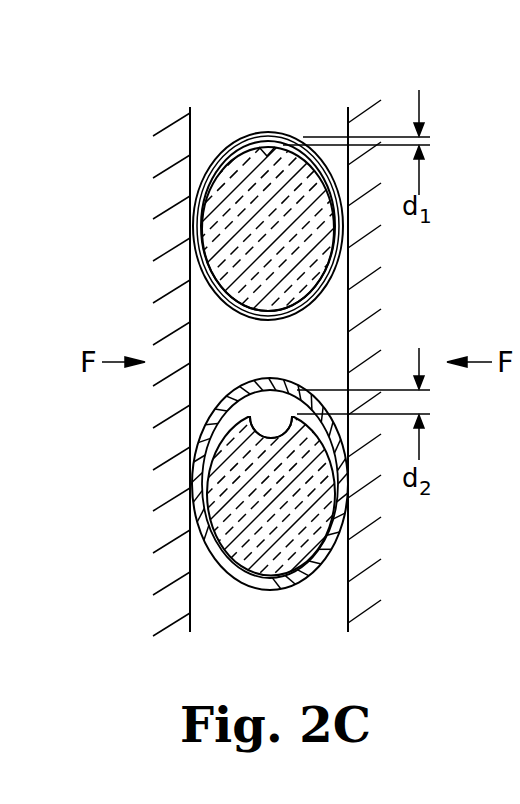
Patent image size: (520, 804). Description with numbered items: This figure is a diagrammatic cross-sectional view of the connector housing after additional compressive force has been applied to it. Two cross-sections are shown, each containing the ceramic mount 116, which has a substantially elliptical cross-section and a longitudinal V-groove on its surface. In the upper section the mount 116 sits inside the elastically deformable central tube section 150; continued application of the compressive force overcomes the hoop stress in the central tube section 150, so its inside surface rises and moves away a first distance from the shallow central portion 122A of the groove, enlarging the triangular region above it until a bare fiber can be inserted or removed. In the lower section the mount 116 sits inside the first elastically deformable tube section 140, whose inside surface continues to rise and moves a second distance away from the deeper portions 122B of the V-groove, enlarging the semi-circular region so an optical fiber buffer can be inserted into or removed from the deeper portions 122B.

The central tube section 150 is at (240, 148).
The mount 116 is at (232, 306).
The shallow central portion of the V-groove 122A is at (265, 146).
The deeper portions of the V-groove 122B is at (266, 436).
The first elastically deformable tube section 140 is at (228, 578).